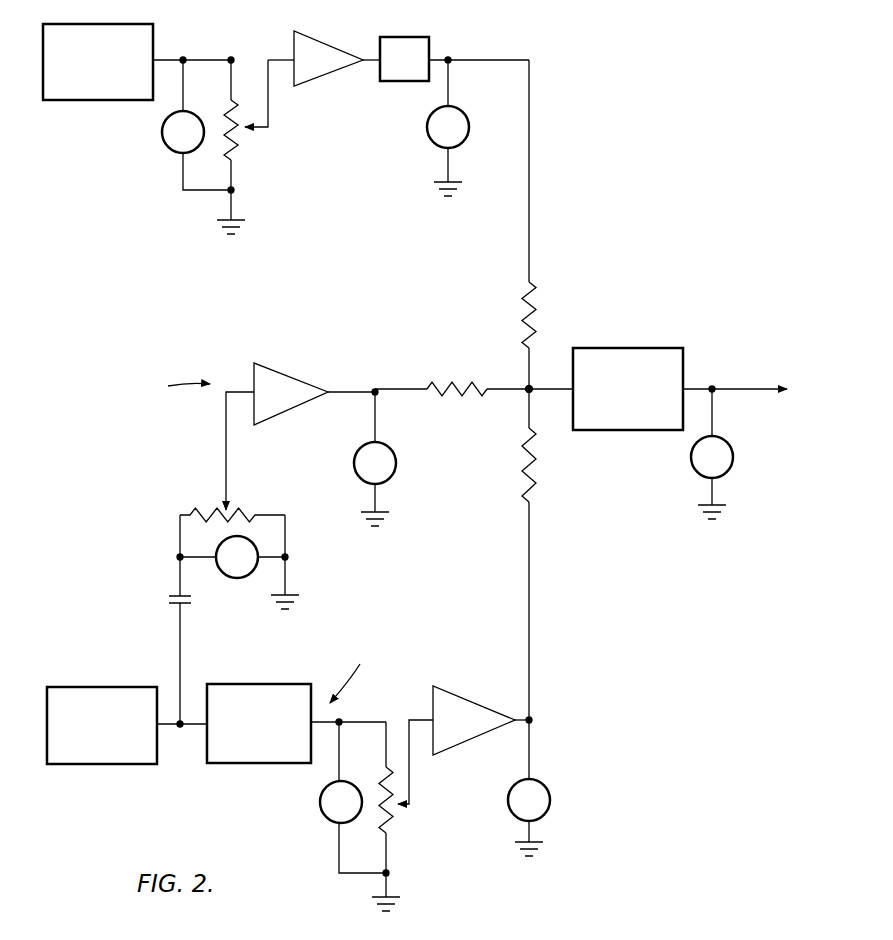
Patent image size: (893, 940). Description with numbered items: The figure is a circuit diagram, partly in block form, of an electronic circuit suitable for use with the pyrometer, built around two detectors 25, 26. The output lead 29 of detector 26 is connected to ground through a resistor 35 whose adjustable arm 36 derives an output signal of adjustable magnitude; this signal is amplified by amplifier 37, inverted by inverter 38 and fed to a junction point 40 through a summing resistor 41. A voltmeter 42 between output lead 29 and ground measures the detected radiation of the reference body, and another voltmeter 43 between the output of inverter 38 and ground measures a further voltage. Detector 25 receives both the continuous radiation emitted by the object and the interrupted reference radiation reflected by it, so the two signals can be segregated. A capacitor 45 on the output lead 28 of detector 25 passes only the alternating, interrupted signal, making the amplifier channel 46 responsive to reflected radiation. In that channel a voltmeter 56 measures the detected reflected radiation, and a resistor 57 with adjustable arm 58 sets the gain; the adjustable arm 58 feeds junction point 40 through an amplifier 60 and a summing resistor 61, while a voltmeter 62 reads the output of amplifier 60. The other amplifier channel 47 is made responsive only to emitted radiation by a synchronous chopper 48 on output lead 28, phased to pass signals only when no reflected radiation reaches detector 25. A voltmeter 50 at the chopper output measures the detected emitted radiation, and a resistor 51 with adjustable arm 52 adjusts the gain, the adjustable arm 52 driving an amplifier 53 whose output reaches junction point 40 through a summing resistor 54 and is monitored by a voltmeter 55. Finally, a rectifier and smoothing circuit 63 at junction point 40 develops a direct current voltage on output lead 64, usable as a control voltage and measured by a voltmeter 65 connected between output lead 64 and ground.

The detector 25 is at (121, 674).
The detector 26 is at (120, 22).
The output lead 28 is at (175, 727).
The output lead 29 is at (168, 60).
The resistor 35 is at (236, 152).
The adjustable arm 36 is at (242, 125).
The amplifier 37 is at (324, 46).
The inverter 38 is at (429, 50).
The junction point 40 is at (533, 386).
The summing resistor 41 is at (536, 320).
The voltmeter 42 is at (167, 147).
The voltmeter 43 is at (467, 121).
The capacitor 45 is at (172, 604).
The amplifier channel 46 is at (176, 386).
The amplifier channel 47 is at (354, 675).
The synchronous chopper 48 is at (290, 674).
The voltmeter 50 is at (324, 820).
The resistor 51 is at (393, 833).
The adjustable arm 52 is at (400, 800).
The amplifier 53 is at (462, 702).
The summing resistor 54 is at (541, 486).
The voltmeter 55 is at (549, 806).
The voltmeter 56 is at (231, 580).
The resistor 57 is at (250, 513).
The adjustable arm 58 is at (226, 485).
The amplifier 60 is at (284, 380).
The summing resistor 61 is at (480, 370).
The voltmeter 62 is at (397, 460).
The rectifier and smoothing circuit 63 is at (658, 348).
The output lead 64 is at (746, 385).
The voltmeter 65 is at (734, 462).